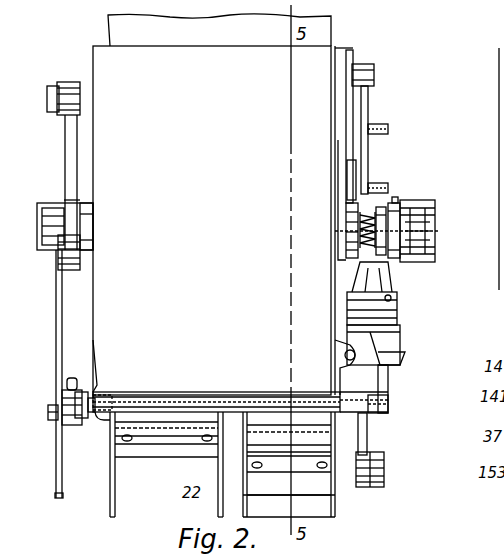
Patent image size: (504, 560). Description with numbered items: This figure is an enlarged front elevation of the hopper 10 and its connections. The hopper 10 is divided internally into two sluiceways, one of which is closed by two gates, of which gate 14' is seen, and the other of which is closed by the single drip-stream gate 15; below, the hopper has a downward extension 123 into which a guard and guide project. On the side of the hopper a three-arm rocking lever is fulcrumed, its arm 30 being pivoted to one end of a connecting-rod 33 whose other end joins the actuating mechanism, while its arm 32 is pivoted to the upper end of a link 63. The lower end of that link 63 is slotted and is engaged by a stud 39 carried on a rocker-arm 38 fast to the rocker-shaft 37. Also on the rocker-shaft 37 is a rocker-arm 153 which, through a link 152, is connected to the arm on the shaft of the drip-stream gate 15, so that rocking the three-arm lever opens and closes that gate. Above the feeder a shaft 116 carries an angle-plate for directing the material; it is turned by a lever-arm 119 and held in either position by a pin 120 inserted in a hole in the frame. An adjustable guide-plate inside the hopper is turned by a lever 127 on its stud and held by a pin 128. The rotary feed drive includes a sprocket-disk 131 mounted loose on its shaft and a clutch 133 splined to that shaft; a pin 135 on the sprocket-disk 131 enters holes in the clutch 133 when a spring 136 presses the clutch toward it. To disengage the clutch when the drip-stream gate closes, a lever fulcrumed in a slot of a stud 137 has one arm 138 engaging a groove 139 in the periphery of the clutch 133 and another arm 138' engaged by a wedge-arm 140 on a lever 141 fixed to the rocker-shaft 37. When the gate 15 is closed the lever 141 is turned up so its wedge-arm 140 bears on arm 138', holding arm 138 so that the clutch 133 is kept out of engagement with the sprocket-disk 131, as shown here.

The hopper 10 is at (135, 192).
The gate 14' is at (159, 464).
The gate 15 is at (315, 488).
The arm of three-arm rocking lever 30 is at (72, 150).
The arm of three-arm rocking lever 32 is at (68, 256).
The connecting-rod 33 is at (56, 92).
The rocker-shaft 37 is at (176, 403).
The rocker-arm 38 is at (67, 384).
The stud 39 is at (50, 416).
The link 63 is at (57, 339).
The shaft 116 is at (366, 78).
The lever-arm 119 is at (365, 153).
The pin 120 is at (380, 128).
The extension of the hopper 123 is at (337, 492).
The lever 127 is at (350, 192).
The pin 128 is at (376, 188).
The sprocket-disk 131 is at (418, 206).
The clutch 133 is at (364, 250).
The pin 135 is at (437, 223).
The spring 136 is at (348, 236).
The stud 137 is at (398, 307).
The lever arm 138 is at (410, 279).
The lever arm 138' is at (405, 345).
The groove 139 is at (384, 222).
The wedge-arm 140 is at (395, 362).
The lever 141 is at (385, 382).
The link 152 is at (385, 468).
The rocker-arm 153 is at (368, 432).